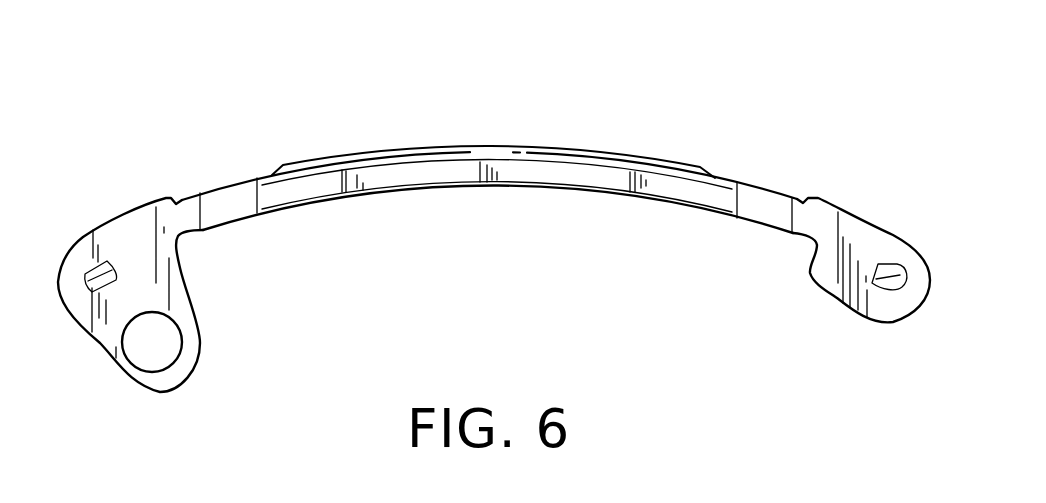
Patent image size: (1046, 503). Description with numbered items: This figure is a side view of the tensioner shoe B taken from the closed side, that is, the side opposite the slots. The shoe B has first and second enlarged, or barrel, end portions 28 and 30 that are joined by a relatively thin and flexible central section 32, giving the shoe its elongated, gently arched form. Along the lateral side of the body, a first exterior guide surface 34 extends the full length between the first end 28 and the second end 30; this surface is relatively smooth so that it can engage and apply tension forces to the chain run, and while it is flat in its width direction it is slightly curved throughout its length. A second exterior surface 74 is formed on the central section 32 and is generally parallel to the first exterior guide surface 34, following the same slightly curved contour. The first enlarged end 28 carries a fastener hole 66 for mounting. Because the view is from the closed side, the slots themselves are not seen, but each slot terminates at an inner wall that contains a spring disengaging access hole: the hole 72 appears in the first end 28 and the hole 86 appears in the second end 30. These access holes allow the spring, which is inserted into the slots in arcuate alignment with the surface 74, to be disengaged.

The shoe B is at (492, 124).
The first enlarged end portion 28 is at (105, 208).
The second enlarged end portion 30 is at (869, 201).
The central section 32 is at (369, 148).
The first exterior guide surface 34 is at (602, 148).
The fastener hole 66 is at (170, 340).
The spring disengaging access hole 72 is at (86, 290).
The second exterior surface 74 is at (508, 195).
The spring disengaging access hole 86 is at (888, 287).